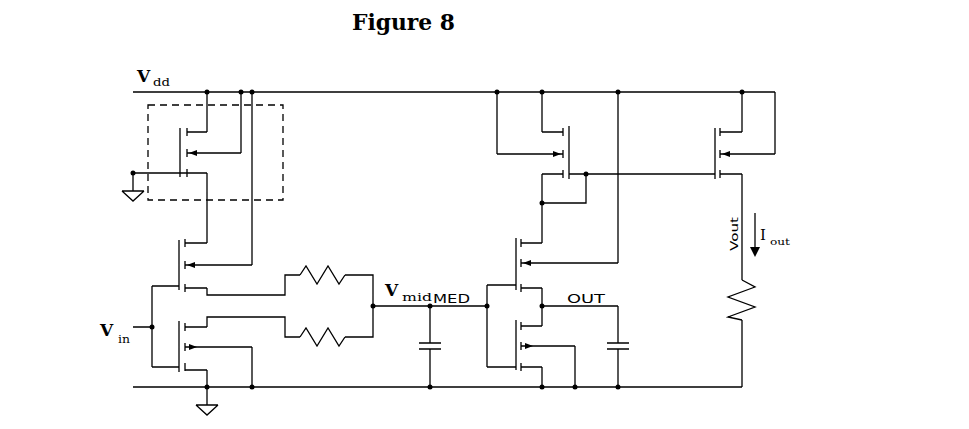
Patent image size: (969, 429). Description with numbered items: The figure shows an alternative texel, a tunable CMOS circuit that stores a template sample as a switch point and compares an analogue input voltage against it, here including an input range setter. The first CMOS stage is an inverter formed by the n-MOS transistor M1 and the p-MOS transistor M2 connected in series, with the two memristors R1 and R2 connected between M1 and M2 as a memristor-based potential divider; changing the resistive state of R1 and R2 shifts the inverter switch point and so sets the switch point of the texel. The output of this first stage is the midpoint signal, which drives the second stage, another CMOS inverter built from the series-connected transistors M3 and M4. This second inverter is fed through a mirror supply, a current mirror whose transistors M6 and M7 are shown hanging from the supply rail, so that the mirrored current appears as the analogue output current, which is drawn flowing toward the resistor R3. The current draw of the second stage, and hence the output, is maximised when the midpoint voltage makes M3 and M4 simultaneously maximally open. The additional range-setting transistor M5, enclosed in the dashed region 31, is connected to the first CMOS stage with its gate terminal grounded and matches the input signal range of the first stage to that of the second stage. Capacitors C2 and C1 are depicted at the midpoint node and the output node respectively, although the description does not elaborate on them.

The start-up circuit block 31 is at (151, 167).
The n-MOS transistor M1 is at (222, 347).
The p-MOS transistor M2 is at (221, 265).
The transistor of second CMOS inverter M3 is at (567, 265).
The transistor of second CMOS inverter M4 is at (558, 345).
The range-setting transistor M5 is at (198, 152).
The mirror supply transistor M6 is at (528, 153).
The PMOS transistor M7 is at (756, 154).
The memristor R1 is at (322, 267).
The memristor R2 is at (322, 328).
The resistor R3 is at (753, 300).
The capacitor C1 is at (628, 346).
The capacitor C2 is at (438, 346).